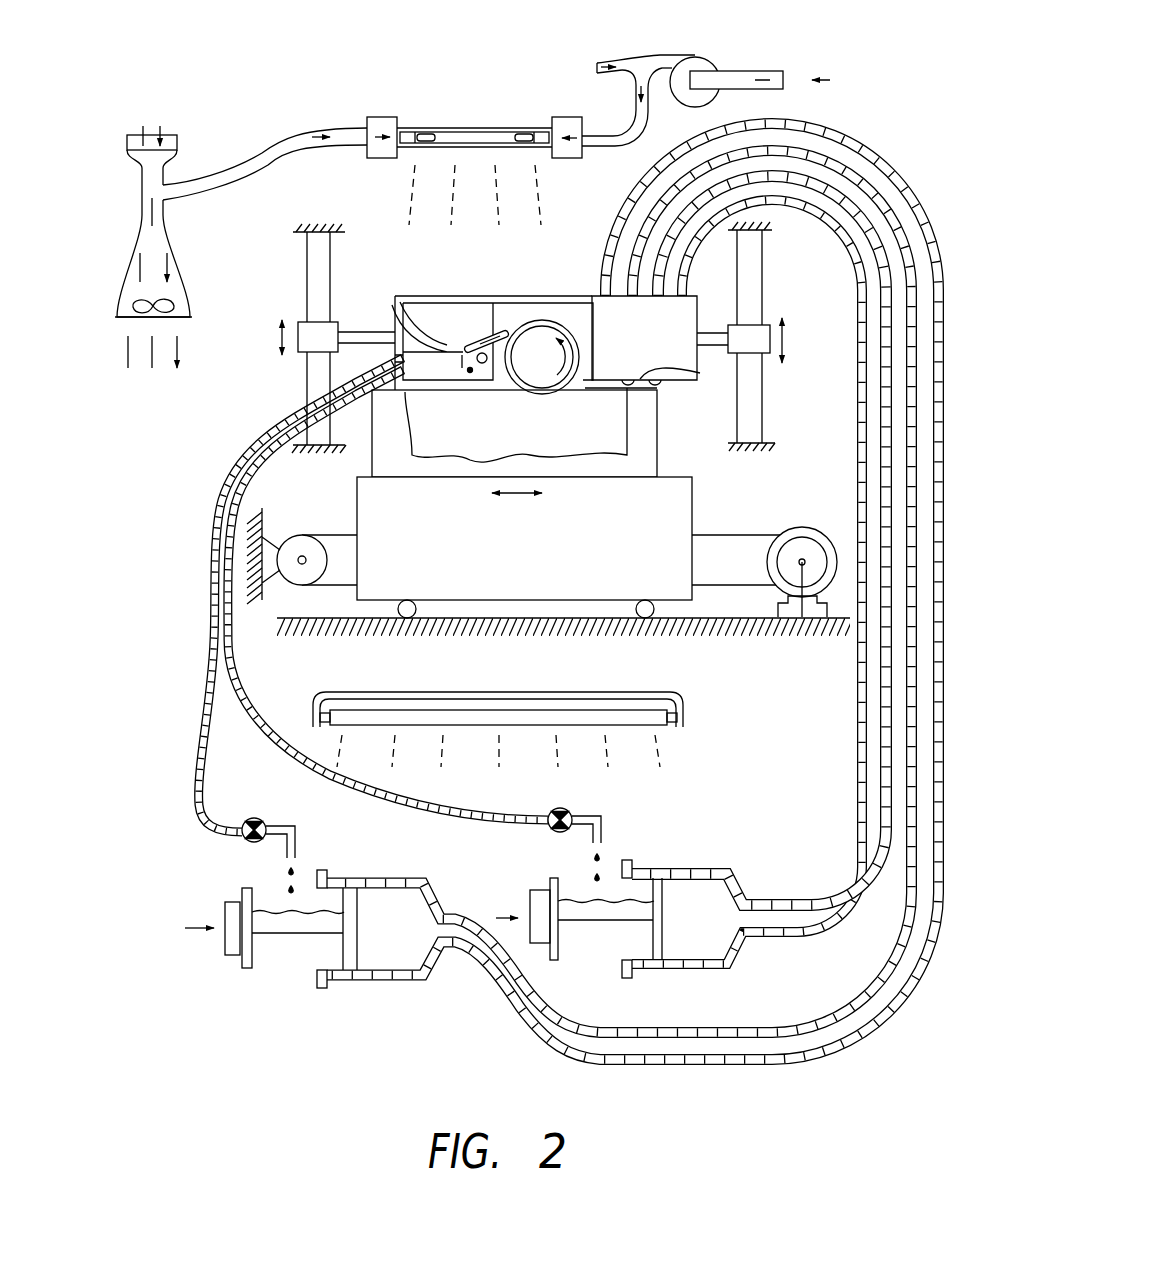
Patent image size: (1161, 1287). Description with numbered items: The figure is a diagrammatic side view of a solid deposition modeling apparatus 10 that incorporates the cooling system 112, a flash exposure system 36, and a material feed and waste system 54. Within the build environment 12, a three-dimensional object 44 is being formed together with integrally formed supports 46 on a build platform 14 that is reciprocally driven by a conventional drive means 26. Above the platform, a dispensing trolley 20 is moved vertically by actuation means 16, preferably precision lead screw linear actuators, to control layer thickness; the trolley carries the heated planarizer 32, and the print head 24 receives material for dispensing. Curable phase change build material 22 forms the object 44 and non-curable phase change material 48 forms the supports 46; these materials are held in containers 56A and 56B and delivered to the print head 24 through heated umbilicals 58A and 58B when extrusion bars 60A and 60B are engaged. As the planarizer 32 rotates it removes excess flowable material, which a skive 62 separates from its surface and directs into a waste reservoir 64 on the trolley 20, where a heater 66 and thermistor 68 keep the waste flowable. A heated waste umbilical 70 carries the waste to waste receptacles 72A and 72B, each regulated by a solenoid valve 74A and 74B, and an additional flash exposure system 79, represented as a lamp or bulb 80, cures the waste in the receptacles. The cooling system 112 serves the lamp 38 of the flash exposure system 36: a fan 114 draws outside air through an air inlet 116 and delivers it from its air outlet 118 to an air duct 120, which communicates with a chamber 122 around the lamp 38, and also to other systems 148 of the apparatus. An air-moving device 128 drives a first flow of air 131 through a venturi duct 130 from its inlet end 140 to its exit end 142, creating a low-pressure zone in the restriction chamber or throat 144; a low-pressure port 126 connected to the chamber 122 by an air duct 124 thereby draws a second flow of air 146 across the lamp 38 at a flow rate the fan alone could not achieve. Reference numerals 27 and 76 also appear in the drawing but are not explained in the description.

The SDM apparatus 10 is at (196, 442).
The build environment 12 is at (674, 386).
The build platform 14 is at (622, 521).
The actuation means 16 is at (300, 318).
The dispensing trolley 20 is at (546, 292).
The curable phase change build material 22 is at (690, 940).
The print head 24 is at (686, 318).
The conventional drive means 26 is at (803, 527).
The wick 27 is at (700, 376).
The heated planarizer 32 is at (547, 383).
The flash exposure system 36 is at (522, 120).
The lamp 38 is at (460, 130).
The three-dimensional object 44 is at (502, 428).
The integrally formed supports 46 is at (402, 471).
The non-curable phase change material 48 is at (392, 947).
The material feed and waste system 54 is at (346, 1018).
The container 56A is at (704, 842).
The container 56B is at (394, 866).
The umbilical 58A is at (856, 695).
The umbilical 58B is at (840, 922).
The extrusion bar 60A is at (548, 885).
The extrusion bar 60B is at (232, 948).
The skive 62 is at (502, 330).
The waste reservoir 64 is at (430, 316).
The heater 66 is at (478, 364).
The thermistor 68 is at (430, 346).
The heated waste umbilical 70 is at (212, 606).
The waste receptacle 72A is at (585, 880).
The waste receptacle 72B is at (268, 888).
The solenoid valve 74A is at (560, 806).
The solenoid valve 74B is at (252, 816).
The supply tube 76 is at (603, 920).
The additional flash exposure system 79 is at (497, 688).
The lamp or bulb 80 is at (615, 716).
The cooling system 112 is at (372, 97).
The fan 114 is at (716, 60).
The air inlet 116 is at (785, 80).
The air outlet 118 is at (662, 58).
The air duct 120 is at (602, 150).
The chamber 122 is at (430, 127).
The air duct 124 is at (264, 141).
The low-pressure port 126 is at (172, 172).
The air-moving device 128 is at (171, 316).
The venturi duct 130 is at (180, 250).
The first flow of air 131 is at (160, 130).
The inlet end 140 is at (141, 131).
The exit end 142 is at (132, 319).
The restriction chamber or throat 144 is at (137, 188).
The second flow of air 146 is at (331, 130).
The other systems 148 is at (582, 56).